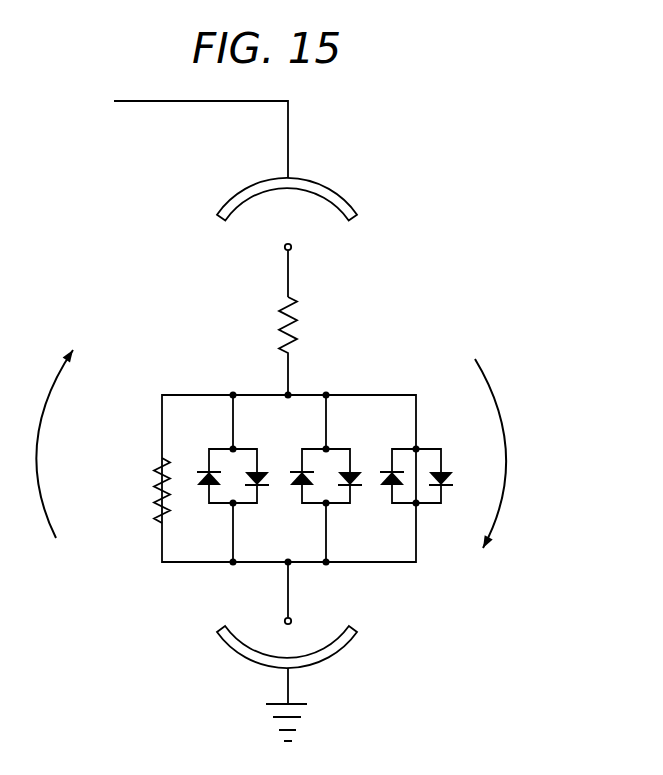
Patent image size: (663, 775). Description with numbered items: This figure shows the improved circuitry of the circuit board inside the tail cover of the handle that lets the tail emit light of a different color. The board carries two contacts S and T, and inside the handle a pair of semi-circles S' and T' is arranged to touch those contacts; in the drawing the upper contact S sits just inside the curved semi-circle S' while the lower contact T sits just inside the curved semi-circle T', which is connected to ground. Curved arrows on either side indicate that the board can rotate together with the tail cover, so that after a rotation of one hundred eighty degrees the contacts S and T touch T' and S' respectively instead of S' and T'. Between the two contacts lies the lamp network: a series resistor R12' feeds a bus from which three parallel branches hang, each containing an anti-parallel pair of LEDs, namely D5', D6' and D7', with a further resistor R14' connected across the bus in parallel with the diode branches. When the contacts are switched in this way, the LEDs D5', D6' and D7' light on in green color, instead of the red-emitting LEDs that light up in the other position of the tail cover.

The semi-circle S' is at (287, 186).
The contact S is at (298, 257).
The resistor R12' is at (255, 346).
The resistor R14' is at (129, 490).
The LED D5' is at (222, 478).
The LED D6' is at (316, 478).
The LED D7' is at (405, 462).
The contact T is at (300, 595).
The semi-circle T' is at (288, 683).